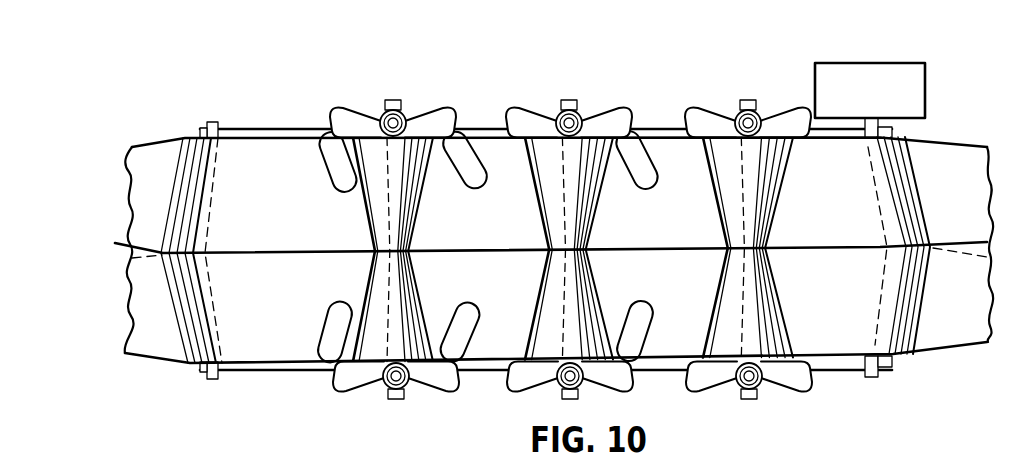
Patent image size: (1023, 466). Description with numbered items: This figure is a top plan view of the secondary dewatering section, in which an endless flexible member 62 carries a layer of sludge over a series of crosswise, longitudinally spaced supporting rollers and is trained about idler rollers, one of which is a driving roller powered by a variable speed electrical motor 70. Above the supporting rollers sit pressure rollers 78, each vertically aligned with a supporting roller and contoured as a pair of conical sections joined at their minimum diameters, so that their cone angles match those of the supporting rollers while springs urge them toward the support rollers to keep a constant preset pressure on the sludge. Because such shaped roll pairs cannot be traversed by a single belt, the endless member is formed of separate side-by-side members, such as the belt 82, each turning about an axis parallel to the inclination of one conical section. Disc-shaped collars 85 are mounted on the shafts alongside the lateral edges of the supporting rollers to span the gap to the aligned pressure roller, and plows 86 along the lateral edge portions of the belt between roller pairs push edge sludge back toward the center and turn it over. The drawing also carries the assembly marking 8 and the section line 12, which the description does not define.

The clamping assembly 8 is at (617, 116).
The section line 12- 12 is at (430, 63).
The endless flexible member 62 is at (166, 366).
The variable speed electrical motor 70 is at (903, 90).
The pressure rollers 78 is at (417, 283).
The belt 82 is at (147, 163).
The collars 85 is at (445, 114).
The plows 86 is at (342, 192).